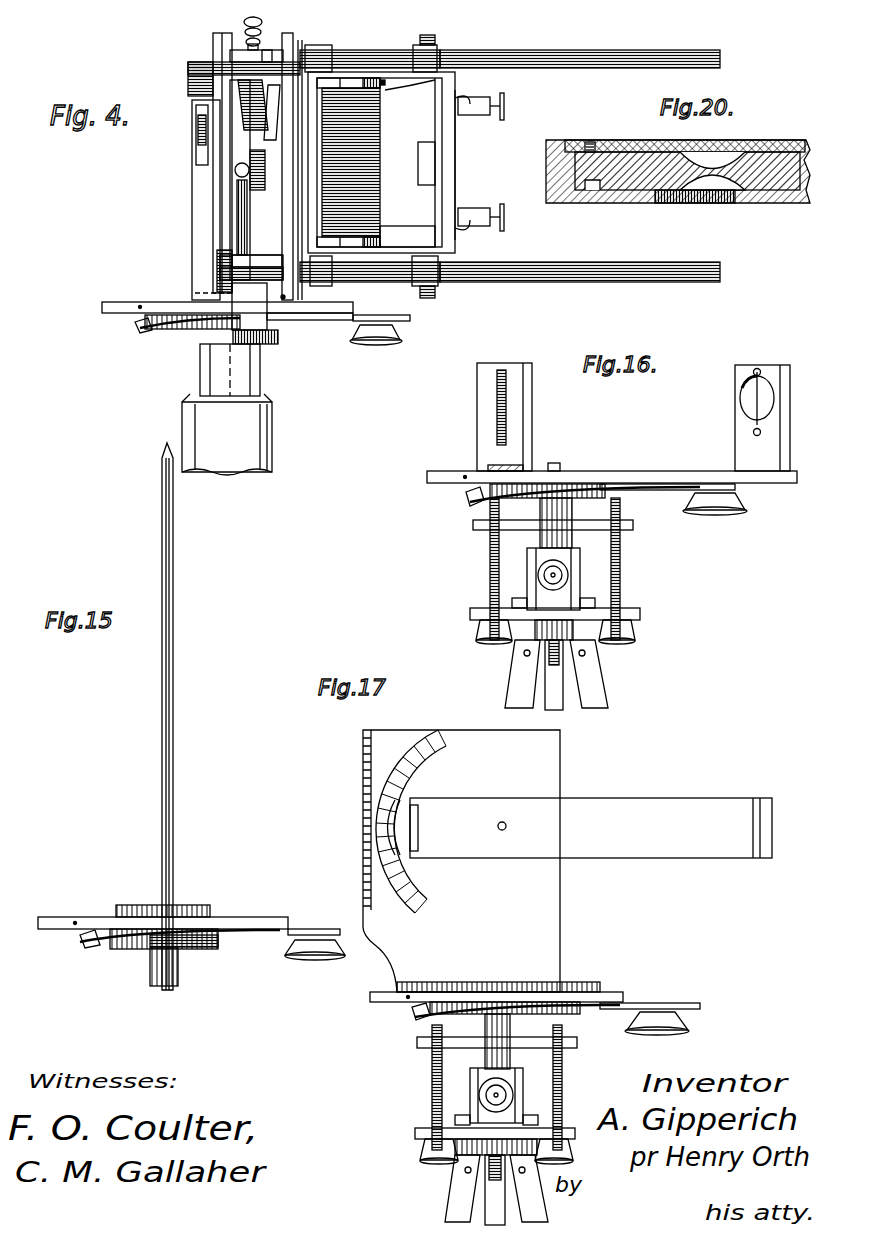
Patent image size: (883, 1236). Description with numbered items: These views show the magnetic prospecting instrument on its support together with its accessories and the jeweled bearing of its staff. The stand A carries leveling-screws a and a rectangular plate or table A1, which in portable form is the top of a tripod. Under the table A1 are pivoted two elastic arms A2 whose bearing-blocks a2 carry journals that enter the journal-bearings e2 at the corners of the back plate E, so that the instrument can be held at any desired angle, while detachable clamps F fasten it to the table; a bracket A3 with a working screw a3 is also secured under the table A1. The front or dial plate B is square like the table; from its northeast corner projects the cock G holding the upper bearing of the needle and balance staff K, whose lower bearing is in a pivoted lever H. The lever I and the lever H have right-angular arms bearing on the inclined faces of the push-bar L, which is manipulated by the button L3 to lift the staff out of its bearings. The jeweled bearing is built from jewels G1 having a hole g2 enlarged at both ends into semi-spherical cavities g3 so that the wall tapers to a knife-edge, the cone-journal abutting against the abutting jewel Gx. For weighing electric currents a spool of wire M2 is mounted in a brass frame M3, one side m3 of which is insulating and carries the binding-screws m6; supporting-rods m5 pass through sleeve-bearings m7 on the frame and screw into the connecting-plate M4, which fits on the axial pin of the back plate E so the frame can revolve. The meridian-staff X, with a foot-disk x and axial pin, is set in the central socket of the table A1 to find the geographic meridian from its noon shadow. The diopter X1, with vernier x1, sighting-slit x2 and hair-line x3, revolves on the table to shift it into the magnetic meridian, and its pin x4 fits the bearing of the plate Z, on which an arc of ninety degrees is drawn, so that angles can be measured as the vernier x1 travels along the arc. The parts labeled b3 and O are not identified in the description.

In FIG. 4, the stand A is at (230, 402).
In FIG. 15, the stand A is at (165, 971).
In FIG. 16, the stand A is at (555, 604).
In FIG. 17, the stand A is at (495, 1119).
In FIG. 4, the plate or table A1 is at (102, 305).
In FIG. 15, the plate or table A1 is at (38, 923).
In FIG. 16, the plate or table A1 is at (427, 477).
In FIG. 17, the plate or table A1 is at (623, 996).
In FIG. 4, the pivoted arms A2 is at (138, 327).
In FIG. 15, the pivoted arms A2 is at (115, 940).
In FIG. 16, the pivoted arms A2 is at (478, 500).
In FIG. 17, the pivoted arms A2 is at (432, 1020).
In FIG. 4, the plate or bracket A3 is at (395, 318).
In FIG. 15, the plate or bracket A3 is at (298, 931).
In FIG. 16, the plate or bracket A3 is at (735, 487).
In FIG. 17, the plate or bracket A3 is at (676, 1004).
In FIG. 16, the leveling-screws a is at (552, 633).
In FIG. 17, the leveling-screws a is at (496, 1150).
In FIG. 4, the bearing-blocks a2 is at (135, 325).
In FIG. 15, the bearing-blocks a2 is at (82, 940).
In FIG. 16, the bearing-blocks a2 is at (470, 496).
In FIG. 17, the bearing-blocks a2 is at (414, 1013).
In FIG. 4, the screw a3 is at (376, 343).
In FIG. 15, the screw a3 is at (315, 959).
In FIG. 16, the screw a3 is at (715, 513).
In FIG. 17, the screw a3 is at (657, 1032).
In FIG. 4, the front or dial plate B is at (218, 258).
In FIG. 4, the stud b³ b3 is at (266, 58).
In FIG. 4, the back plate E is at (288, 50).
In FIG. 4, the journal-bearings e2 is at (286, 297).
In FIG. 4, the detachable clamps F is at (231, 306).
In FIG. 4, the cock G is at (192, 150).
In FIG. 20, the cock G is at (770, 140).
In FIG. 20, the jewels G1 is at (636, 203).
In FIG. 20, the abutting jewel Gx is at (650, 146).
In FIG. 20, the hole or bearing proper g2 is at (722, 140).
In FIG. 20, the semi-spherical cavities g3 is at (705, 160).
In FIG. 4, the pivoted lever H is at (272, 112).
In FIG. 4, the lever I is at (204, 135).
In FIG. 4, the needle and balance staff K is at (232, 185).
In FIG. 4, the push-bar L is at (253, 105).
In FIG. 4, the button L3 is at (253, 18).
In FIG. 4, the spool of wire M2 is at (385, 165).
In FIG. 4, the rectangular frame M3 is at (390, 250).
In FIG. 4, the connecting-plate M4 is at (312, 45).
In FIG. 4, the insulated side m3 is at (448, 198).
In FIG. 4, the supporting-rods m5 is at (492, 58).
In FIG. 4, the binding-screws m6 is at (485, 115).
In FIG. 4, the sleeve-bearings m7 is at (418, 46).
In FIG. 4, the roller O is at (238, 178).
In FIG. 15, the meridian-staff X is at (176, 716).
In FIG. 15, the foot-disk x is at (195, 912).
In FIG. 16, the diopter X1 is at (612, 460).
In FIG. 17, the diopter X1 is at (591, 828).
In FIG. 16, the vernier x1 is at (486, 468).
In FIG. 17, the vernier x1 is at (405, 796).
In FIG. 16, the sighting-slit x2 is at (498, 422).
In FIG. 16, the hair-line x3 is at (753, 418).
In FIG. 16, the pin or journal x4 is at (554, 457).
In FIG. 17, the pin or journal x4 is at (511, 819).
In FIG. 17, the plate Z is at (461, 861).